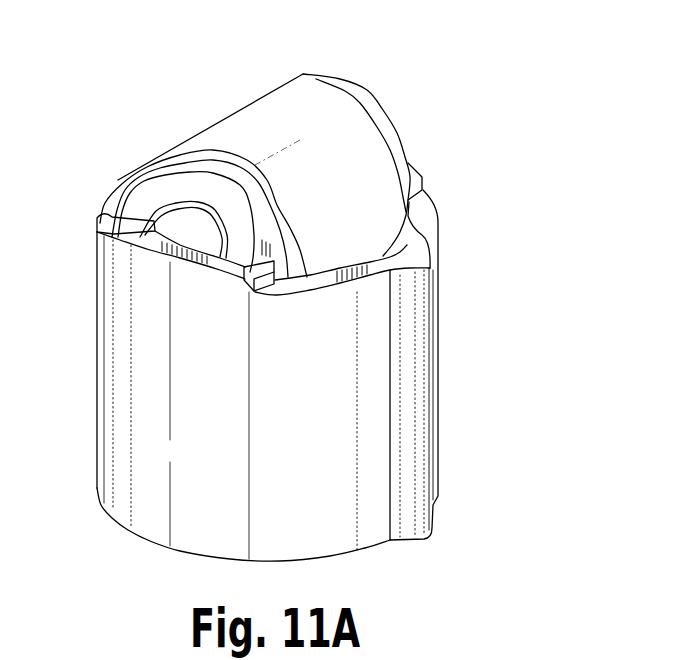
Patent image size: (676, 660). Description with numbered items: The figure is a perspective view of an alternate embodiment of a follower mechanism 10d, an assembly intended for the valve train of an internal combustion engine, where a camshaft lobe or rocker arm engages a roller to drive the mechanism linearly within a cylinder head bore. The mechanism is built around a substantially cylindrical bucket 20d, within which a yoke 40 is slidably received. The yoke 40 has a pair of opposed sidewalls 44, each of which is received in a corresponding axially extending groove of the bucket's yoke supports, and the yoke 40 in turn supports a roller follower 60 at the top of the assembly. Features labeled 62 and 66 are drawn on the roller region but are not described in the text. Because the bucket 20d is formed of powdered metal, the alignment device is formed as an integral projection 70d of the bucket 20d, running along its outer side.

The follower mechanism 10d is at (462, 115).
The bucket 20d is at (292, 425).
The yoke 40 is at (371, 82).
The sidewall 44 is at (153, 200).
The roller follower 60 is at (250, 92).
The inner recess 62 is at (180, 231).
The cylindrical surface 66 is at (290, 157).
The integral projection 70d is at (413, 388).